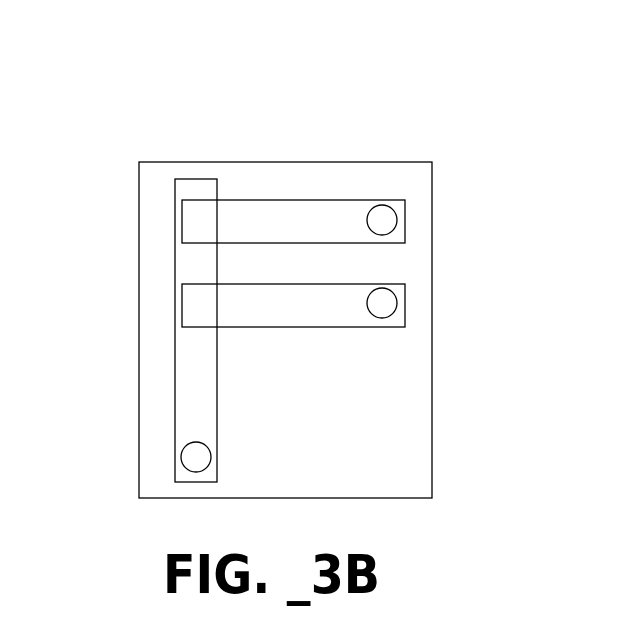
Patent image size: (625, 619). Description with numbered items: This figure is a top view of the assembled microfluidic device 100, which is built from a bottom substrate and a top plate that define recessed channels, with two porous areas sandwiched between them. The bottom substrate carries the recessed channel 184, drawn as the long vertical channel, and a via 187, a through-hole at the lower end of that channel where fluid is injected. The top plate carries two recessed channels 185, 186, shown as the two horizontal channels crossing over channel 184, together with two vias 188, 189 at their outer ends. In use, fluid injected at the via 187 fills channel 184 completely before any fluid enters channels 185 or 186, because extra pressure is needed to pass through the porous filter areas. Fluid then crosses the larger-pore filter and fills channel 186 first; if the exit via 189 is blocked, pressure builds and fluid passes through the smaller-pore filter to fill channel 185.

The microfluidic device 100 is at (103, 71).
The channel 184 is at (183, 371).
The recessed channel 185 is at (360, 217).
The recessed channel 186 is at (266, 292).
The via 187 is at (181, 457).
The via 188 is at (397, 220).
The via 189 is at (397, 303).